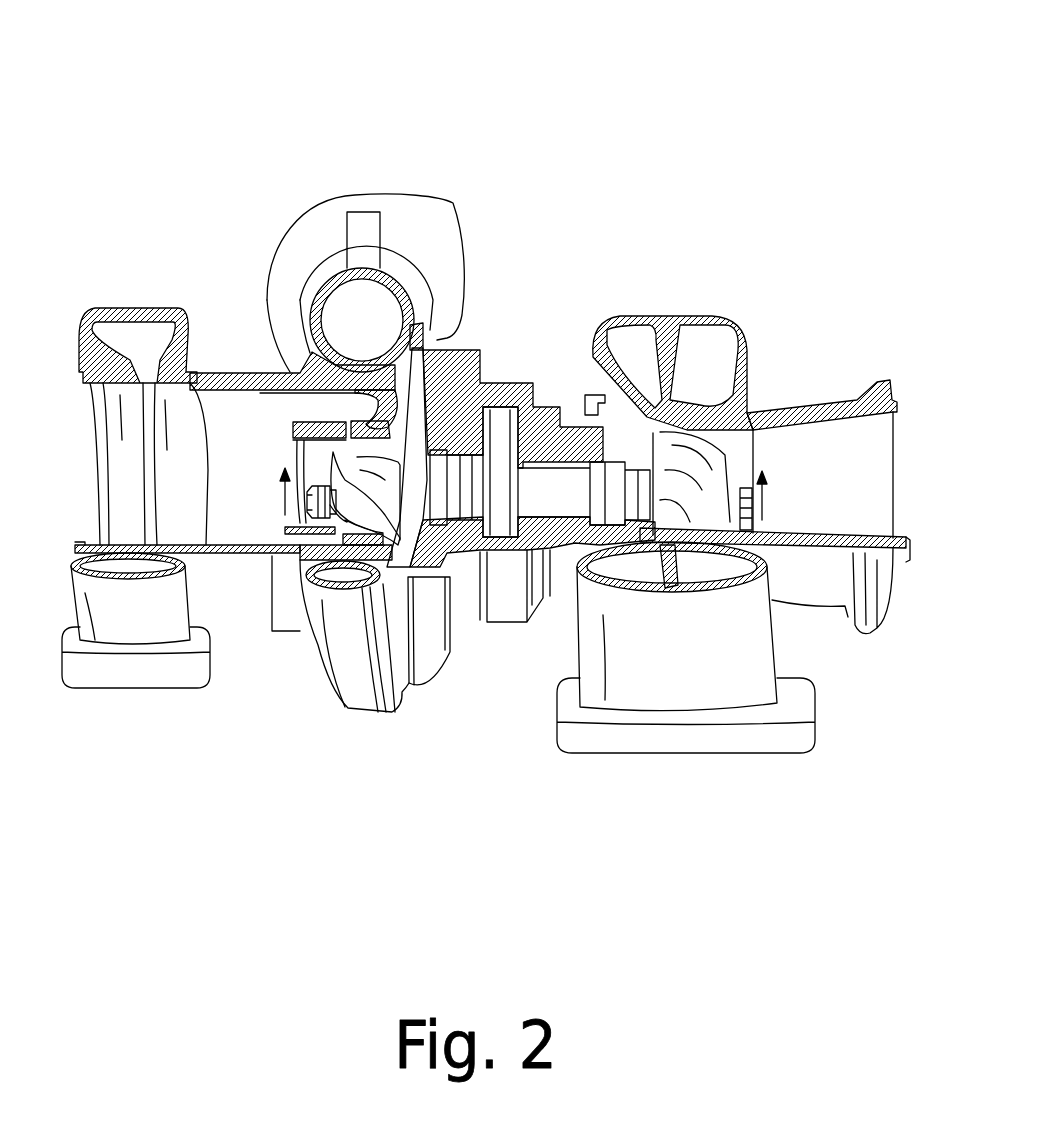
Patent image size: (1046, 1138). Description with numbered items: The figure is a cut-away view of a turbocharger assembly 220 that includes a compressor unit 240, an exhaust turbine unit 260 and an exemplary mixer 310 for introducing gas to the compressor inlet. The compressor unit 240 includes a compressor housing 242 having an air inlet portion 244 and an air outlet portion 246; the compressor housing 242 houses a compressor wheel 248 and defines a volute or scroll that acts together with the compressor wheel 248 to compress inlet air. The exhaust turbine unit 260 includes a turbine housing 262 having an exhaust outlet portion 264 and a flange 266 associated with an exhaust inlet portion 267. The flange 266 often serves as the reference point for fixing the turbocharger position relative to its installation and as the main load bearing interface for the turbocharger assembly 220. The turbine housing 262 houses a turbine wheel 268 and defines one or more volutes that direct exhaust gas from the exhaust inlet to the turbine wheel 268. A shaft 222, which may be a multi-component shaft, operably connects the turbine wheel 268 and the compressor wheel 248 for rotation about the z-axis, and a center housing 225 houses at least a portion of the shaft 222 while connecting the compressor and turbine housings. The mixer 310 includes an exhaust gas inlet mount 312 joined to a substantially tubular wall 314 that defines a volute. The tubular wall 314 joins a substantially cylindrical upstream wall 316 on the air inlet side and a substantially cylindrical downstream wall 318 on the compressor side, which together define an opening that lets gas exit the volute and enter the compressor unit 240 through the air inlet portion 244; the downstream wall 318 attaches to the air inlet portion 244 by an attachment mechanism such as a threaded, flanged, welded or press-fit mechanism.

The turbocharger assembly 220 is at (497, 53).
The shaft 222 is at (543, 492).
The center housing 225 is at (478, 386).
The compressor unit 240 is at (240, 277).
The compressor housing 242 is at (355, 690).
The air inlet portion 244 is at (253, 507).
The air outlet portion 246 is at (310, 213).
The compressor wheel 248 is at (333, 480).
The exhaust turbine unit 260 is at (815, 330).
The turbine housing 262 is at (713, 317).
The exhaust outlet portion 264 is at (857, 483).
The flange 266 is at (798, 695).
The exhaust inlet portion 267 is at (733, 653).
The turbine wheel 268 is at (718, 470).
The mixer 310 is at (121, 285).
The exhaust gas inlet mount 312 is at (152, 677).
The tubular wall 314 is at (180, 598).
The upstream wall 316 is at (133, 437).
The downstream wall 318 is at (173, 447).